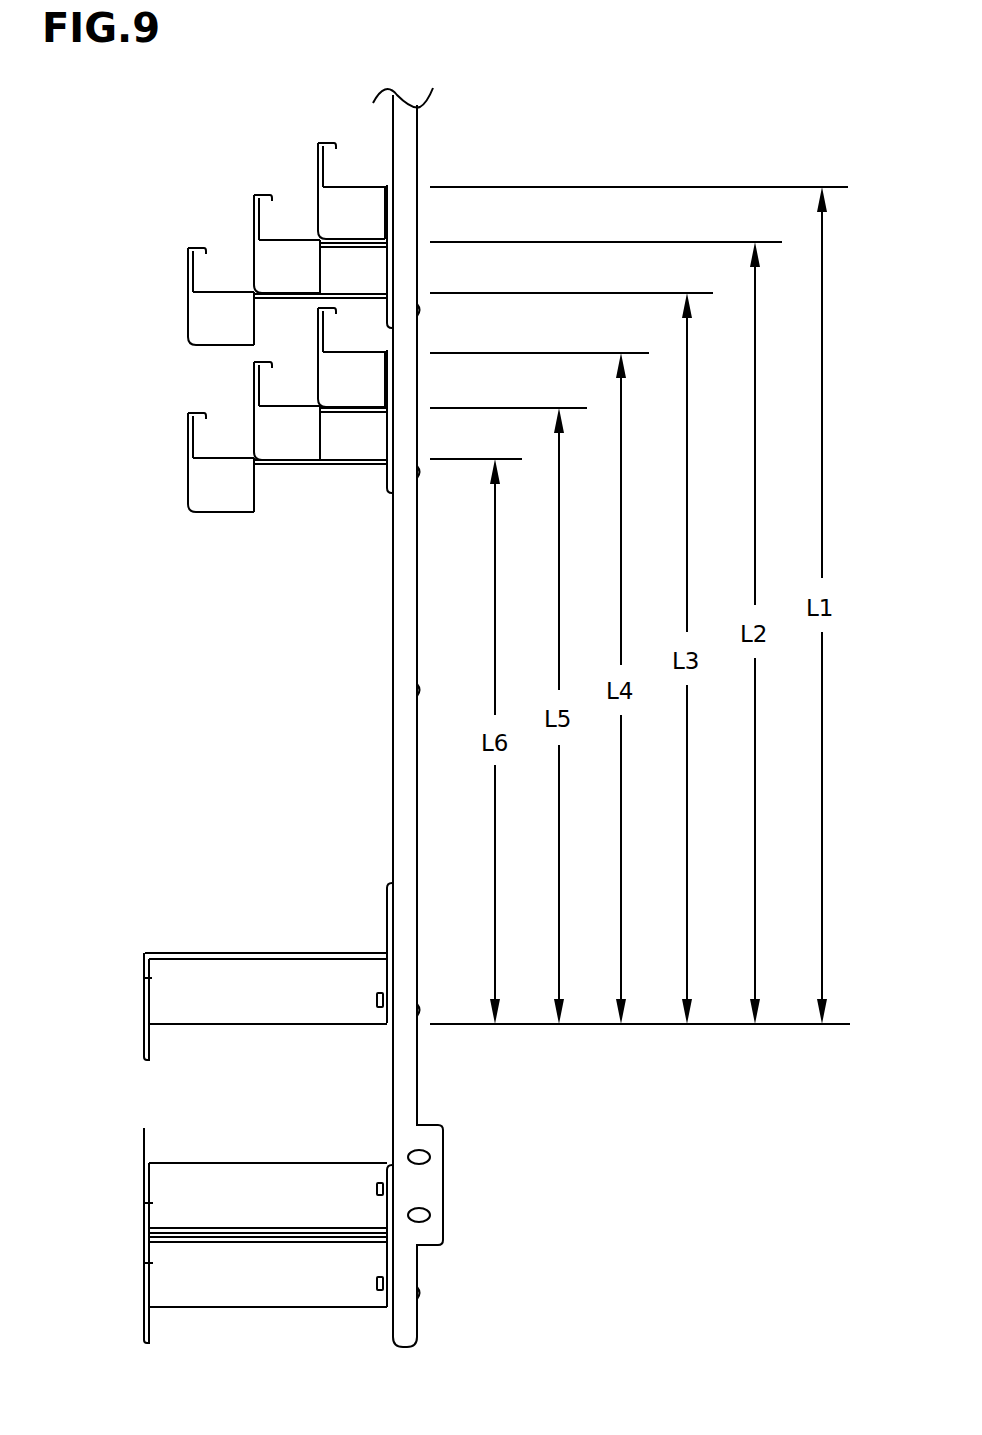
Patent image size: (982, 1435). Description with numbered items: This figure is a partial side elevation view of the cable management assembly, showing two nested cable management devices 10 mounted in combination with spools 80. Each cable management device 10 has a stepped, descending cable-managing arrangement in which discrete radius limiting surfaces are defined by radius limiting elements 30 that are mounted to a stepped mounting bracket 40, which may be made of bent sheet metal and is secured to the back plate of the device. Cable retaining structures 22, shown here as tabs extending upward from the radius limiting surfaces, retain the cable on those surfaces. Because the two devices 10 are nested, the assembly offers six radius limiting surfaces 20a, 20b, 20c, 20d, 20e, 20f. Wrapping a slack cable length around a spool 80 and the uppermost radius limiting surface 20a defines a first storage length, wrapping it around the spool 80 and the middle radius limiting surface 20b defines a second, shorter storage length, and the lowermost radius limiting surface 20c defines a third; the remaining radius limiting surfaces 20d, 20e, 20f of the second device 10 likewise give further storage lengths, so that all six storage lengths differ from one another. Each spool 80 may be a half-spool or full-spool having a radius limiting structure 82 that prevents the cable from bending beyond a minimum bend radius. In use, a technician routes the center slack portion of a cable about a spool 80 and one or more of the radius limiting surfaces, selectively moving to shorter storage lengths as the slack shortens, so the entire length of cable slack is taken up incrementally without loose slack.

The cable management device 10 is at (155, 301).
The uppermost radius limiting surface 20a is at (355, 186).
The middle radius limiting surface 20b is at (288, 239).
The lowermost radius limiting surface 20c is at (222, 291).
The radius limiting surface 20d is at (353, 351).
The radius limiting surface 20e is at (288, 405).
The radius limiting surface 20f is at (222, 457).
The cable retaining structure 22 is at (322, 142).
The radius limiting element 30 is at (187, 272).
The stepped mounting bracket 40 is at (370, 453).
The spool 80 is at (145, 1007).
The radius limiting structure 82 is at (274, 1015).